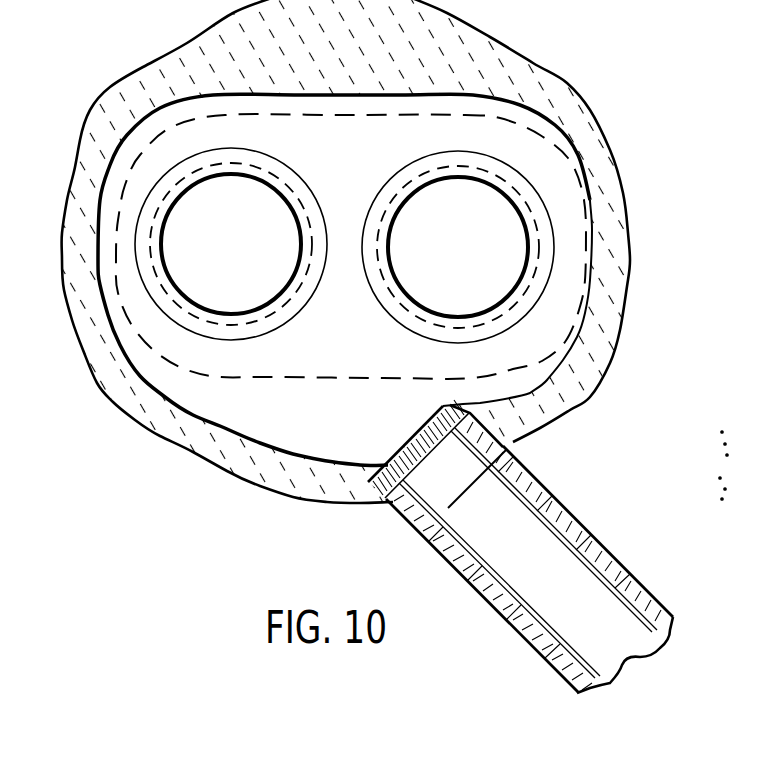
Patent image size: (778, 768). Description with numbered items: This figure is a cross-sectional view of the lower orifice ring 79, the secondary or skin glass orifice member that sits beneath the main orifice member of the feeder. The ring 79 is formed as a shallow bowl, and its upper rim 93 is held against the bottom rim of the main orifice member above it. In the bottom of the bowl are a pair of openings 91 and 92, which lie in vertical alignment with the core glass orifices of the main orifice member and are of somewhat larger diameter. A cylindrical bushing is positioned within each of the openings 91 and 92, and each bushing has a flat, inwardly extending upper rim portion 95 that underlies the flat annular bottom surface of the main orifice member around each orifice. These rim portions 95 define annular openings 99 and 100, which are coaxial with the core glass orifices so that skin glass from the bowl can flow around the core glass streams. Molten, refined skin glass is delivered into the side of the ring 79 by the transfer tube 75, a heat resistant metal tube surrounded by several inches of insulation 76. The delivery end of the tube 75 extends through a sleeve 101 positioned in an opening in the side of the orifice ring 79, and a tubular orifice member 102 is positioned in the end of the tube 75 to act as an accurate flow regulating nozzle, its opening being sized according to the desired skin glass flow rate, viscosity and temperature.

The transfer tube 75 is at (562, 527).
The insulation 76 is at (487, 600).
The lower orifice ring 79 is at (110, 397).
The opening 91 is at (233, 176).
The opening 92 is at (457, 181).
The upper rim 93 is at (82, 160).
The upper rim portion 95 is at (247, 328).
The annular opening 99 is at (176, 284).
The annular opening 100 is at (418, 305).
The sleeve 101 is at (465, 408).
The tubular orifice member 102 is at (495, 477).